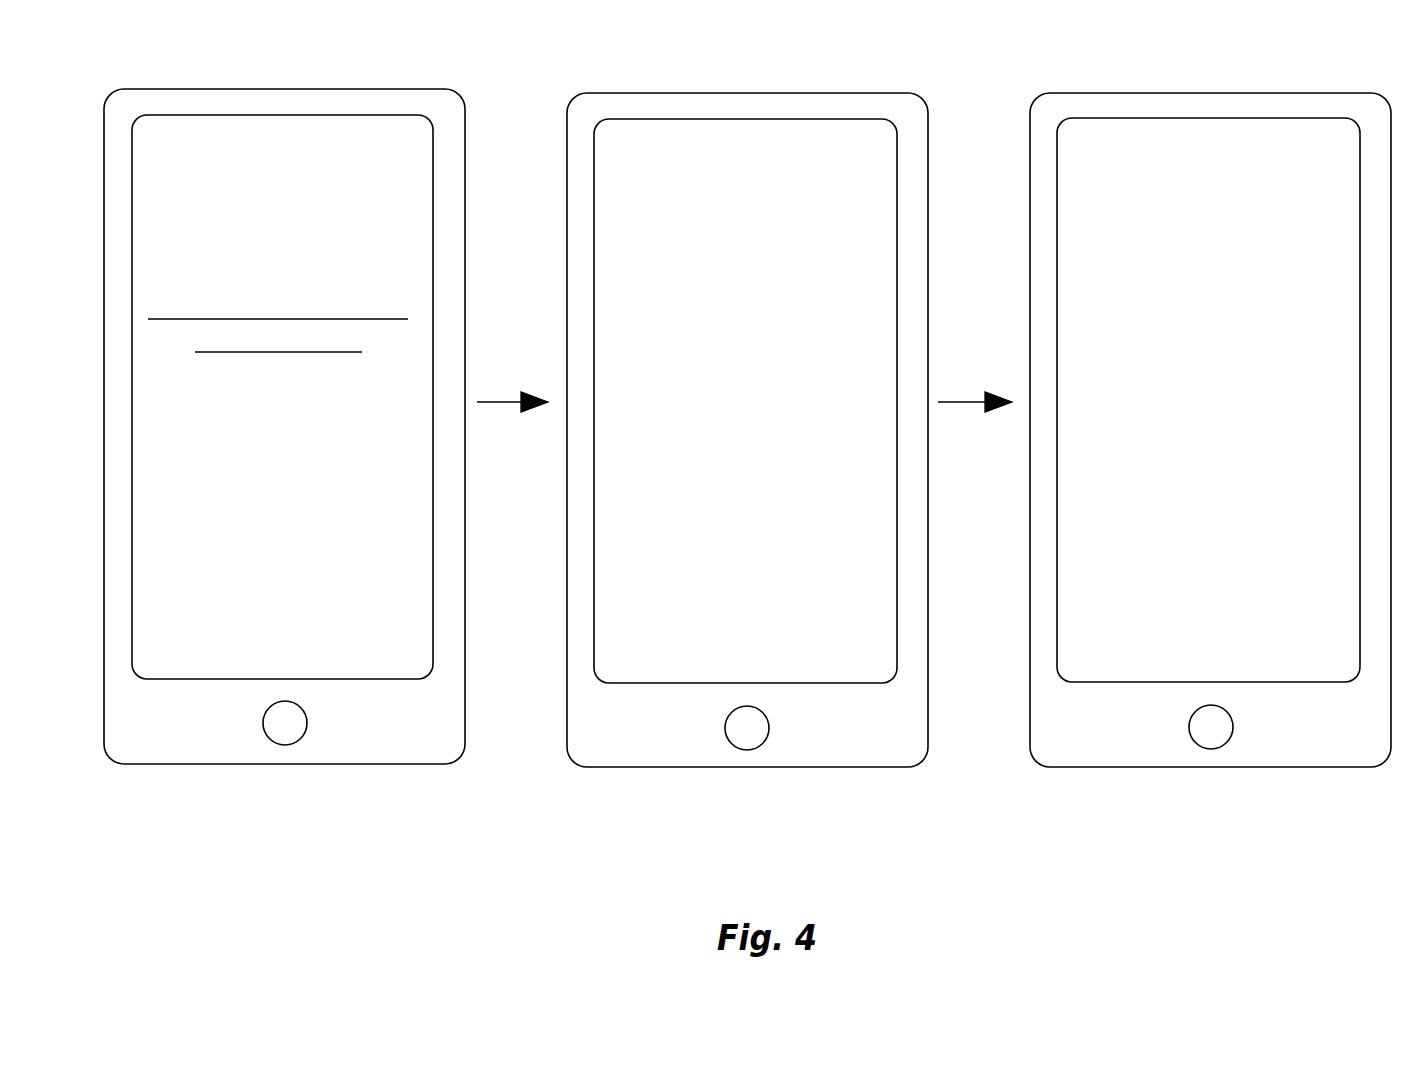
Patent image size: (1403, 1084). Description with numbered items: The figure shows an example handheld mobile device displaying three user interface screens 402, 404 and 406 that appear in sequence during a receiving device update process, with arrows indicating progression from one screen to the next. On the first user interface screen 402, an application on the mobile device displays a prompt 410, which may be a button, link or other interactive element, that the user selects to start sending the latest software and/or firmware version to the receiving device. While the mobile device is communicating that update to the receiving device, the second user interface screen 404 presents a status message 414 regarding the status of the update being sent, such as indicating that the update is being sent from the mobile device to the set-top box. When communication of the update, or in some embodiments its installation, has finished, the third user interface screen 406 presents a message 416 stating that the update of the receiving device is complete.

The user interface screen 402 is at (403, 133).
The user interface screen 404 is at (870, 135).
The user interface screen 406 is at (1192, 133).
The prompt 410 is at (418, 307).
The status message 414 is at (885, 292).
The message 416 is at (1306, 281).